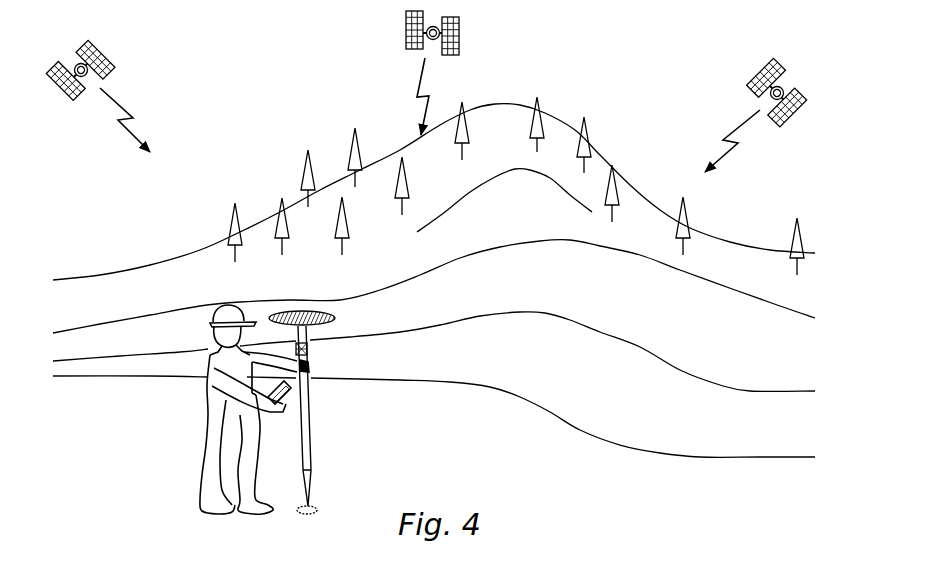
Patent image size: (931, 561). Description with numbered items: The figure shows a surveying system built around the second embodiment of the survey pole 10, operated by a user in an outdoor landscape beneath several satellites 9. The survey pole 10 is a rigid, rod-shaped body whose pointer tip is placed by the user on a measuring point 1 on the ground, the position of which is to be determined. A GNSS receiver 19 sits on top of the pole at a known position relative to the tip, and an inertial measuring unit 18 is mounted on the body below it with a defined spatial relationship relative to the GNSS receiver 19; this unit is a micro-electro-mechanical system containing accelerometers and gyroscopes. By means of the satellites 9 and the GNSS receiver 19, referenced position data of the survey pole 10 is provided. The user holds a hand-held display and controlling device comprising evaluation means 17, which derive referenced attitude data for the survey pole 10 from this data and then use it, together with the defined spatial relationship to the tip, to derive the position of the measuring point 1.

The satellites 9 is at (112, 49).
The survey pole 10 is at (330, 398).
The GNSS receiver 19 is at (336, 318).
The inertial measuring unit 18 is at (308, 349).
The evaluation means 17 is at (288, 395).
The measuring point 1 is at (311, 505).